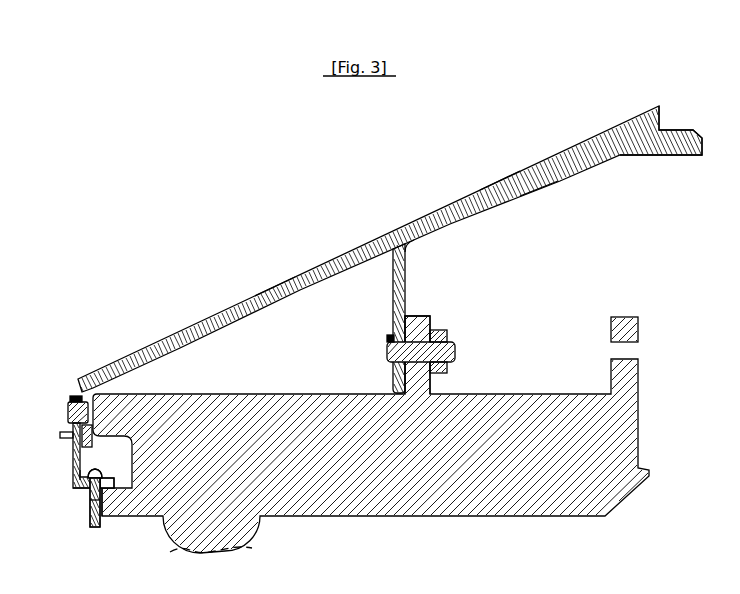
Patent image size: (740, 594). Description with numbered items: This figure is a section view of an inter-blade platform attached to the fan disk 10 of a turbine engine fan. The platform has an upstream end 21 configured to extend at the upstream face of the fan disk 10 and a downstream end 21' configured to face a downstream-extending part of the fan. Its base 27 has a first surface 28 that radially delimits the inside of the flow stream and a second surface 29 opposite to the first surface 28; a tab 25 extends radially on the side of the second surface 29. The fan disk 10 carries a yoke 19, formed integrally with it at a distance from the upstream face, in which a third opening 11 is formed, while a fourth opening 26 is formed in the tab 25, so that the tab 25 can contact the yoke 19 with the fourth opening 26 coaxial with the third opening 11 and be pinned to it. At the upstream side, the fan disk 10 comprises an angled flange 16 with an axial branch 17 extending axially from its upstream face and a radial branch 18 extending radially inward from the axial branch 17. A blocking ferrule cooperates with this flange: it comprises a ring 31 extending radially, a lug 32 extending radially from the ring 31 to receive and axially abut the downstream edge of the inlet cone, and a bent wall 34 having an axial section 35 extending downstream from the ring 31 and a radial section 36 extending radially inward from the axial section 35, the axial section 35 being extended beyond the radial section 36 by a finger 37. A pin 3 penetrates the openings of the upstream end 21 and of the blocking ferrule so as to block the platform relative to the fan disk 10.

The pin 3 is at (67, 408).
The fan disk 10 is at (374, 459).
The third opening 11 is at (418, 338).
The angled flange 16 is at (113, 506).
The axial branch 17 is at (110, 487).
The radial branch 18 is at (107, 513).
The yoke 19 is at (427, 374).
The upstream end 21 is at (374, 249).
The downstream end 21' is at (661, 123).
The tab 25 is at (393, 283).
The fourth opening 26 is at (392, 330).
The base 27 is at (498, 192).
The first surface 28 is at (270, 284).
The second surface 29 is at (541, 199).
The ring 31 is at (72, 456).
The lug 32 is at (56, 436).
The bent wall 34 is at (78, 490).
The axial section 35 is at (80, 475).
The radial section 36 is at (88, 515).
The finger 37 is at (88, 506).